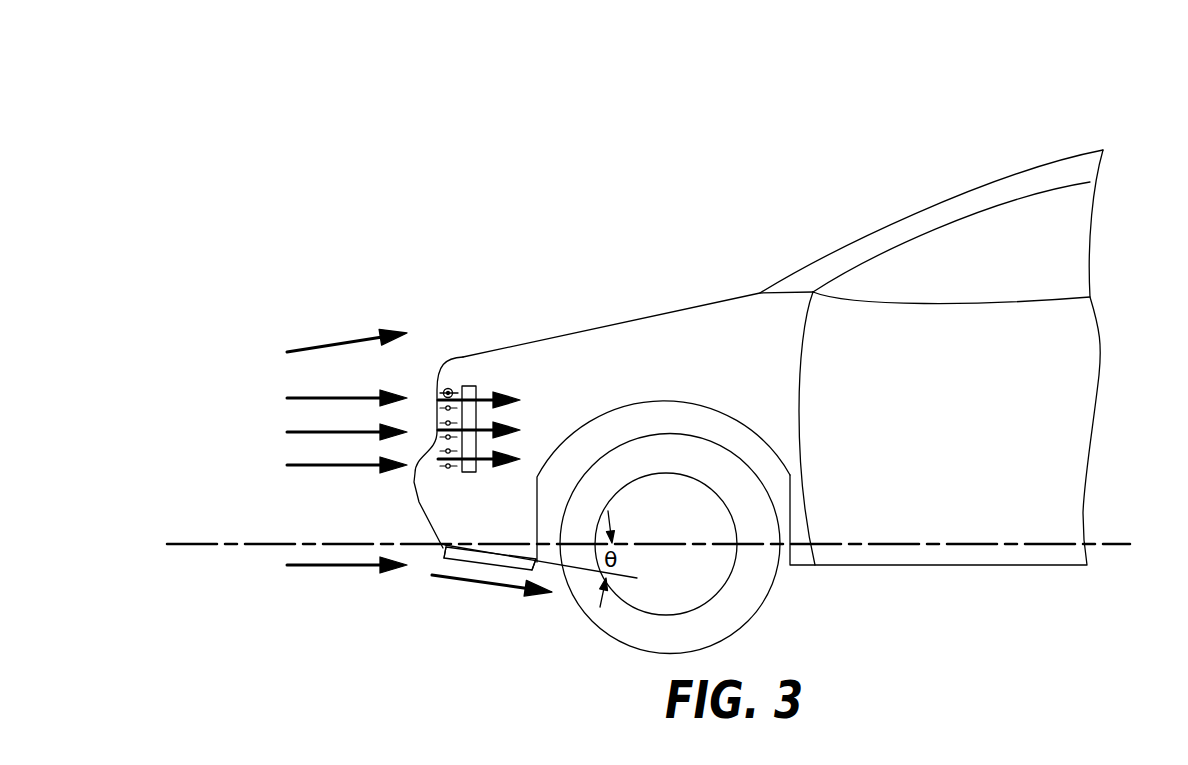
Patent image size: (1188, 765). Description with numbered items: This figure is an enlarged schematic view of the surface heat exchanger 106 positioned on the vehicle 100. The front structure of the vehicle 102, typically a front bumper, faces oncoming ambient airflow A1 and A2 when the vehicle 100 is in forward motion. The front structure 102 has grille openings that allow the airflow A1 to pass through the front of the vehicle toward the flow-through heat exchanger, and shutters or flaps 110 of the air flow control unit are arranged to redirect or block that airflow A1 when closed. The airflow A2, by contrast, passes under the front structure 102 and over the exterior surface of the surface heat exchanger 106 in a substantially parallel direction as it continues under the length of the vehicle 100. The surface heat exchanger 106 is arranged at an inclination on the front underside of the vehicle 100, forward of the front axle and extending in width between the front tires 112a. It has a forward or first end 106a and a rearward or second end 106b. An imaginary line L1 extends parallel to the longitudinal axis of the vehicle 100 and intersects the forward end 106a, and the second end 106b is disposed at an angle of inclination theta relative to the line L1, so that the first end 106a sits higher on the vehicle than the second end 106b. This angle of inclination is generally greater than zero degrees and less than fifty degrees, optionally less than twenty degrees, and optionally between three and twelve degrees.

The vehicle 100 is at (1080, 92).
The front structure of the vehicle 102 is at (415, 486).
The surface heat exchanger 106 is at (482, 566).
The forward end of the heat exchanger 106a is at (446, 548).
The rearward end of the heat exchanger 106b is at (545, 566).
The shutters or flaps 110 is at (447, 470).
The front tires 112a is at (752, 600).
The imaginary line L1 is at (210, 543).
The airflow A1 is at (327, 401).
The airflow A2 is at (332, 567).